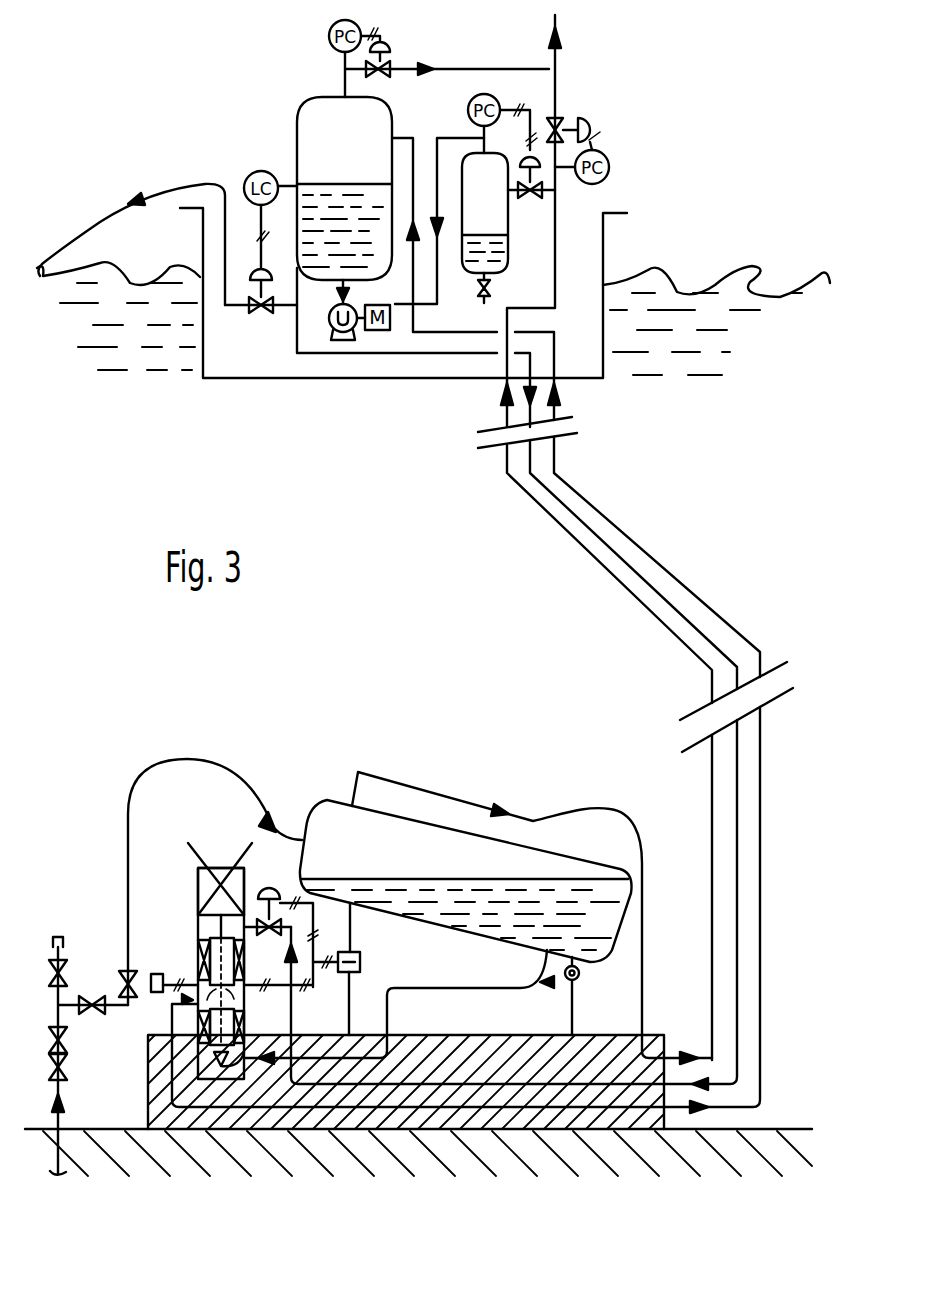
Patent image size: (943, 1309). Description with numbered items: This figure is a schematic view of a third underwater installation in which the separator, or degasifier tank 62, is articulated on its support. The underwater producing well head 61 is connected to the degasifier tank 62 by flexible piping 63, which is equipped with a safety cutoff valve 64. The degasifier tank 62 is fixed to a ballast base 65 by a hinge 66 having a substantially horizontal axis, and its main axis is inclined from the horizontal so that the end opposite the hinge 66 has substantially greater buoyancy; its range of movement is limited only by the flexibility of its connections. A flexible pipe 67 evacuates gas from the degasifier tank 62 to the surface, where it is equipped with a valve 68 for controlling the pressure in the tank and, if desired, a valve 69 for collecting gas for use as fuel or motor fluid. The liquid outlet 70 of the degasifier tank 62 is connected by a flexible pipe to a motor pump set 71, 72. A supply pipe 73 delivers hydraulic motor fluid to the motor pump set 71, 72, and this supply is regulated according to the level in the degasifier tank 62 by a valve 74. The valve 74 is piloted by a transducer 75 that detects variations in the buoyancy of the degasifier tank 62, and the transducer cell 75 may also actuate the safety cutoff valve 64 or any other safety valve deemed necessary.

The underwater producing well head 61 is at (55, 1003).
The degasifier tank 62 is at (327, 800).
The flexible piping 63 is at (123, 814).
The safety cutoff valve 64 is at (127, 970).
The ballast base 65 is at (623, 1040).
The hinge 66 is at (580, 977).
The flexible pipe 67 is at (662, 625).
The valve 68 is at (567, 135).
The valve 69 is at (532, 202).
The liquid outlet 70 is at (518, 988).
The motor pump set 71 is at (197, 1031).
The motor pump set 72 is at (205, 945).
The supply pipe 73 is at (735, 878).
The valve 74 is at (263, 857).
The transducer 75 is at (362, 962).